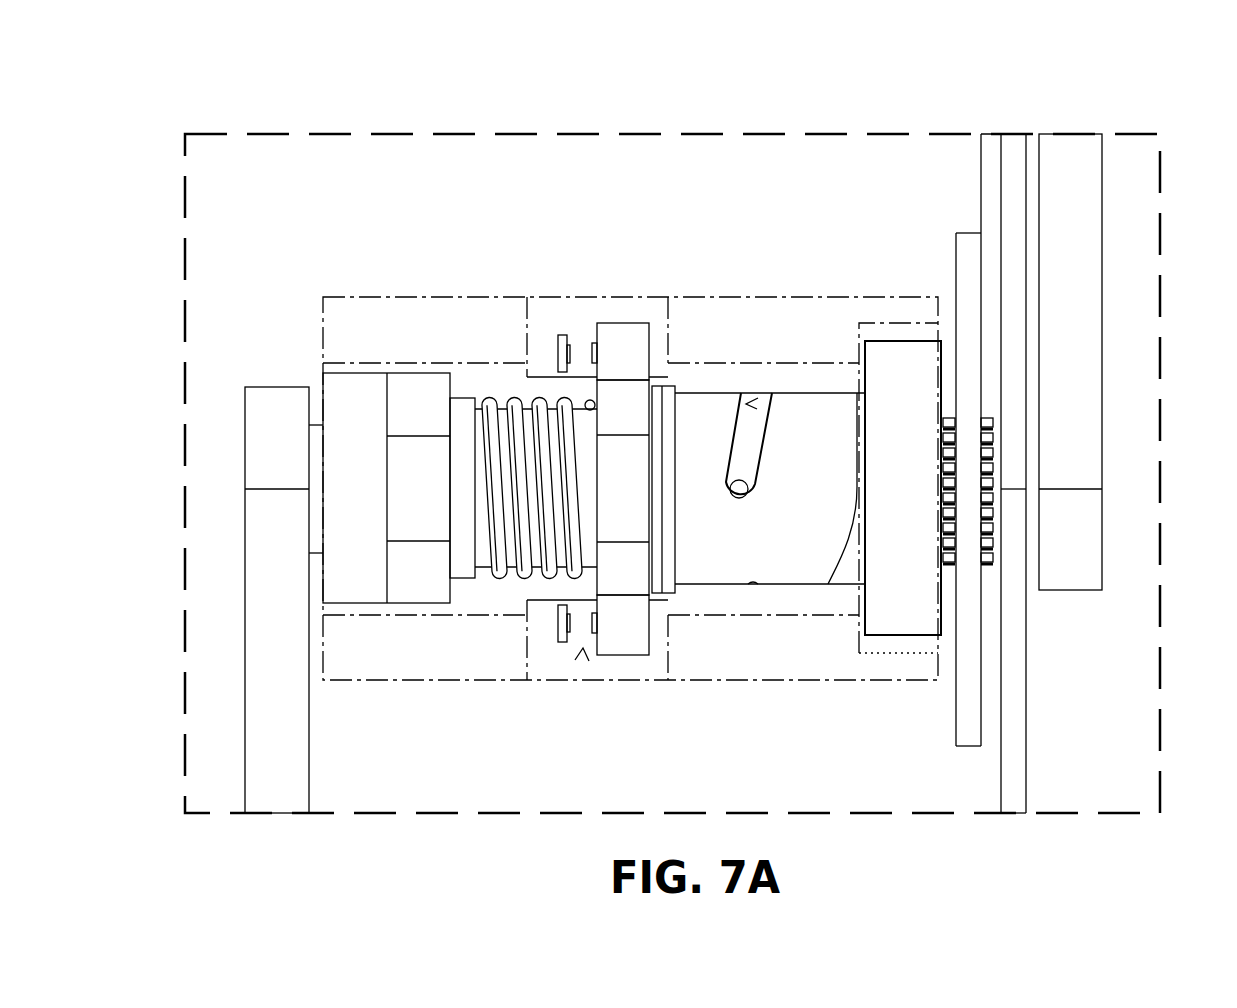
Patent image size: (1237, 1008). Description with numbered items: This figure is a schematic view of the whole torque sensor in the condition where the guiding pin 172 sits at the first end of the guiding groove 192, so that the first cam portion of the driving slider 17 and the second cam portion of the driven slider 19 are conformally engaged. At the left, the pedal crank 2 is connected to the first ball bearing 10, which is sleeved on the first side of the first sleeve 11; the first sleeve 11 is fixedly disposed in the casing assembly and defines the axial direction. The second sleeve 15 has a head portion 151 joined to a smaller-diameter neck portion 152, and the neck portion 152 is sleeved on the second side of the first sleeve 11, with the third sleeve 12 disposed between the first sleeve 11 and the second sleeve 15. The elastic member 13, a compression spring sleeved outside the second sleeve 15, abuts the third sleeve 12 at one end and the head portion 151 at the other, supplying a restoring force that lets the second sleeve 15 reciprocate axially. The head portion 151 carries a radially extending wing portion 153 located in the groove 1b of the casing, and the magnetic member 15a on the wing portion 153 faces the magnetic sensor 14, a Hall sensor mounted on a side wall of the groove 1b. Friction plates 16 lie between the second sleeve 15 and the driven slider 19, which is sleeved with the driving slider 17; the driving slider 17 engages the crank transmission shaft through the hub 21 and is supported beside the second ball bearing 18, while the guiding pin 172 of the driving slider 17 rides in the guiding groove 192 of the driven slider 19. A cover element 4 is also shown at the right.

The groove 1b is at (584, 652).
The pedal crank 2 is at (268, 639).
The cover plate 4 is at (1090, 415).
The first ball bearing 10 is at (333, 382).
The first sleeve 11 is at (413, 383).
The third sleeve 12 is at (465, 407).
The elastic member 13 is at (495, 425).
The magnetic sensor 14 is at (561, 635).
The second sleeve 15 is at (620, 338).
The magnetic member 15a is at (595, 628).
The friction plate 16 is at (673, 377).
The driving slider 17 is at (794, 305).
The second ball bearing 18 is at (918, 355).
The driven slider 19 is at (717, 403).
The hub 21 is at (988, 547).
The head portion 151 is at (637, 398).
The neck portion 152 is at (583, 420).
The wing portion 153 is at (620, 332).
The guiding pin 172 is at (855, 487).
The guiding groove 192 is at (749, 439).